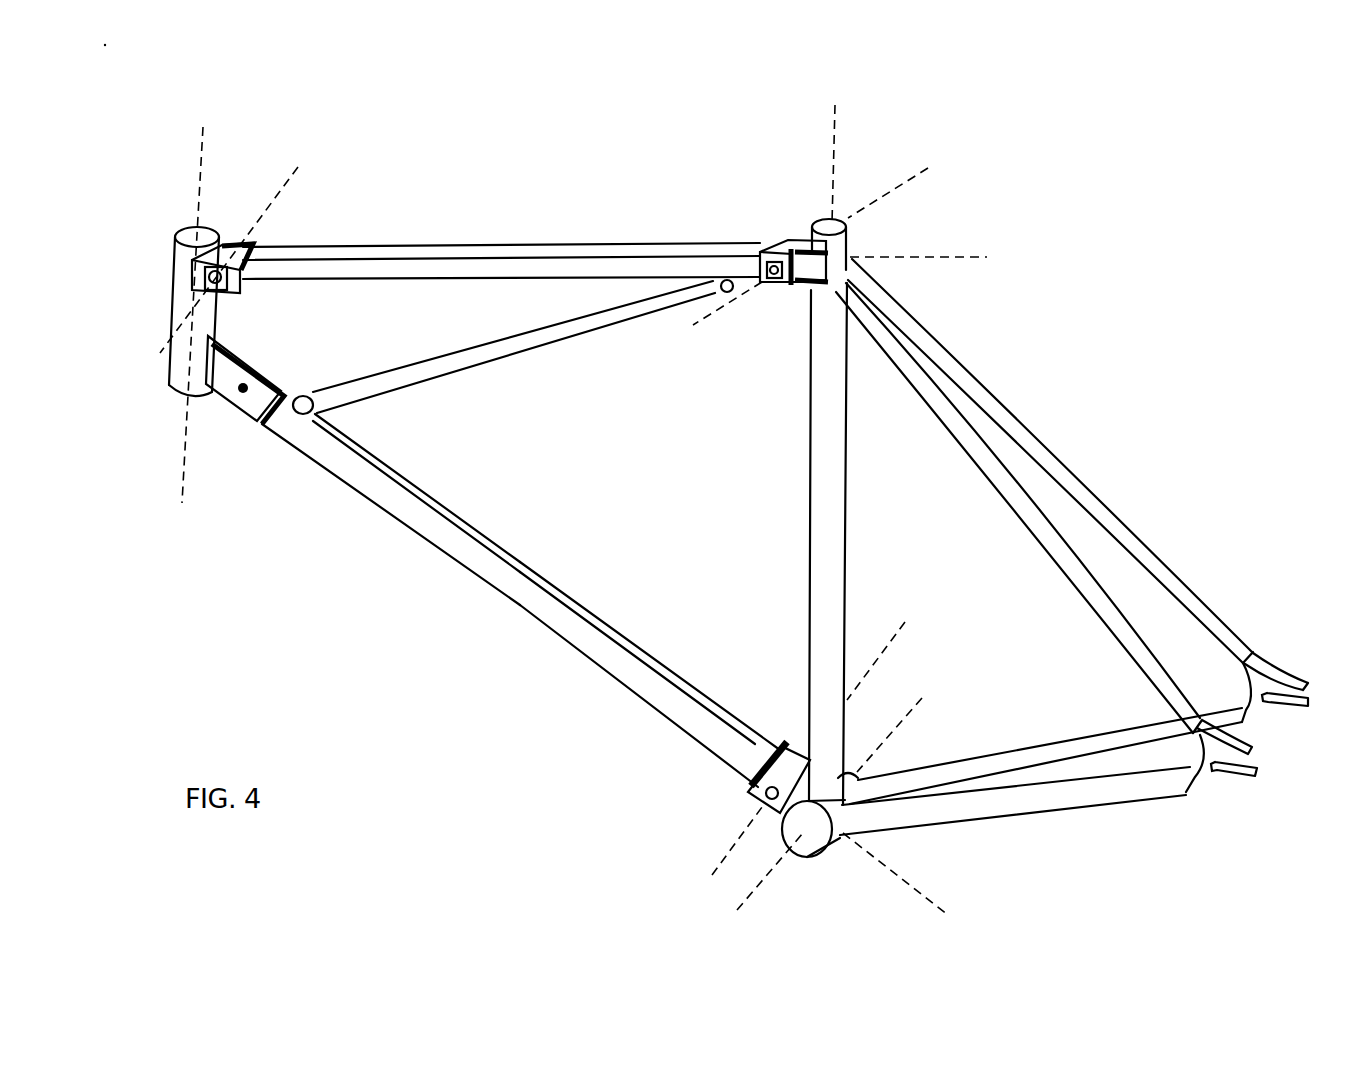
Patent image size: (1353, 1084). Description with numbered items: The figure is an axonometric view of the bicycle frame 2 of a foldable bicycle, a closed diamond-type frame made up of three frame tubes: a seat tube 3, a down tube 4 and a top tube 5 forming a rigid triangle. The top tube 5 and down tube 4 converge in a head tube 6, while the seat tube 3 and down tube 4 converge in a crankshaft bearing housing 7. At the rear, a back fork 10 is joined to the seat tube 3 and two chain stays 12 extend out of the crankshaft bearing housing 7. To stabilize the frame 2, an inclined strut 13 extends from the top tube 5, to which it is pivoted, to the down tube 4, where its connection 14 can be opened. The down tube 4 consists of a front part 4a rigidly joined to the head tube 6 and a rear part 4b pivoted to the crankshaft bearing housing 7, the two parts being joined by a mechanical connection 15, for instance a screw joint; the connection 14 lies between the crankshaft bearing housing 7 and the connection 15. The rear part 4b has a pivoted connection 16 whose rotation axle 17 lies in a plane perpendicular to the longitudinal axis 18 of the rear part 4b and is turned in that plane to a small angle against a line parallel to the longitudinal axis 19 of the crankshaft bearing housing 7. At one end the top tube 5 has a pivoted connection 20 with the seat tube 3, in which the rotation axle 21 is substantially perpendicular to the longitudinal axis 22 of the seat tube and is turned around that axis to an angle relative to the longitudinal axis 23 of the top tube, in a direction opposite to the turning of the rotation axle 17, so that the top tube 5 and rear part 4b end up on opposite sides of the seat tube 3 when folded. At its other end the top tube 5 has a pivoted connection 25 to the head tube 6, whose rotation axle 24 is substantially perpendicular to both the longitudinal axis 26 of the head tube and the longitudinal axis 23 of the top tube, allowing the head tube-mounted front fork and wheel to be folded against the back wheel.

The bicycle frame 2 is at (1081, 219).
The seat tube 3 is at (843, 460).
The down tube 4 is at (516, 620).
The front part of the down tube 4a is at (267, 377).
The rear part of the down tube 4b is at (617, 642).
The top tube 5 is at (533, 247).
The head tube 6 is at (178, 296).
The crankshaft bearing housing 7 is at (817, 858).
The back fork 10 is at (1207, 605).
The chain stays 12 is at (1072, 797).
The inclined strut 13 is at (572, 337).
The connection 14 is at (307, 390).
The mechanical connection 15 is at (243, 417).
The pivoted connection 16 is at (790, 747).
The rotation axle 17 is at (903, 635).
The longitudinal axis of the rear part of the down tube 18 is at (893, 867).
The longitudinal axis of the crankshaft bearing housing 19 is at (922, 698).
The pivoted connection 20 is at (798, 245).
The rotation axle 21 is at (928, 168).
The longitudinal axis of the seat tube 22 is at (837, 110).
The longitudinal axis of the top tube 23 is at (987, 257).
The rotation axle 24 is at (298, 175).
The pivoted connection 25 is at (233, 244).
The longitudinal axis of the head tube 26 is at (198, 158).